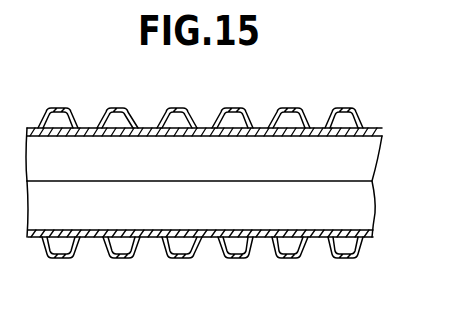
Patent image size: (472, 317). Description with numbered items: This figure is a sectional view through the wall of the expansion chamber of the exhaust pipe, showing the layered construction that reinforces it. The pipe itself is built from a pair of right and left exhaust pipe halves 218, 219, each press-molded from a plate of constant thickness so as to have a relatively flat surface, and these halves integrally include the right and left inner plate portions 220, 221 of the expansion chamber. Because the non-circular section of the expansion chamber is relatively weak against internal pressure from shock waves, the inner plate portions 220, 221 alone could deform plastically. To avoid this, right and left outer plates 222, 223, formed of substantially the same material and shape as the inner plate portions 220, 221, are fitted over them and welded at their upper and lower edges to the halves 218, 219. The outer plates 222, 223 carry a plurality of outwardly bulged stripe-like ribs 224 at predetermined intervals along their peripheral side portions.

The outwardly bulged stripe-like ribs 224 is at (68, 107).
The left outer plate 223 is at (372, 125).
The right outer plate 222 is at (373, 240).
The left exhaust pipe half 219 is at (380, 150).
The left inner plate portion 221 is at (360, 163).
The right inner plate portion 220 is at (358, 198).
The right exhaust pipe half 218 is at (375, 215).